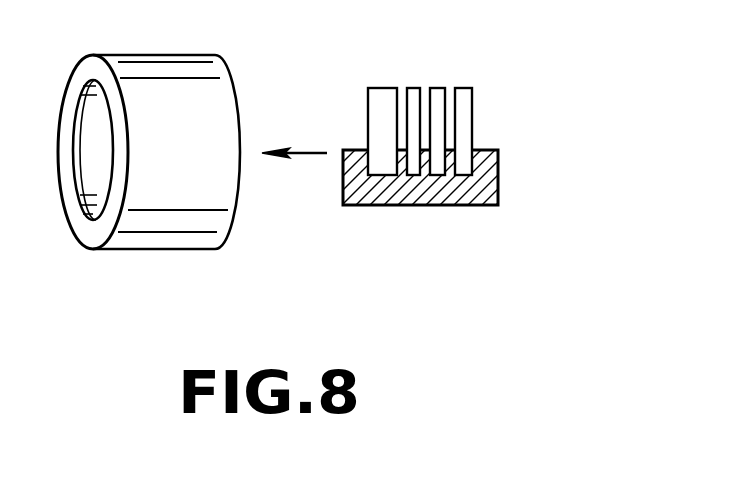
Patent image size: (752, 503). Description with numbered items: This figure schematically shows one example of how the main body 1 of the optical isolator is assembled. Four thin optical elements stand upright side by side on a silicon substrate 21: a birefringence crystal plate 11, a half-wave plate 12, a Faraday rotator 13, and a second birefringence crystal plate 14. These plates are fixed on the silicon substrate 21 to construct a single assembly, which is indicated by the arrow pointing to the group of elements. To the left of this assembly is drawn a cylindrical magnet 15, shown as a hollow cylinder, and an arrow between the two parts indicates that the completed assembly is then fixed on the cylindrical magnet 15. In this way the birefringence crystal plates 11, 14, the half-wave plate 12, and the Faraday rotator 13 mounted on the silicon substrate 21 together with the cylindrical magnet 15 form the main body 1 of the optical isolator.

The main body of the optical isolator 1 is at (520, 115).
The birefringence crystal plate 11 is at (380, 92).
The half-wave plate 12 is at (411, 90).
The Faraday rotator 13 is at (438, 93).
The birefringence crystal plate 14 is at (463, 93).
The cylindrical magnet 15 is at (186, 62).
The silicon substrate 21 is at (498, 189).